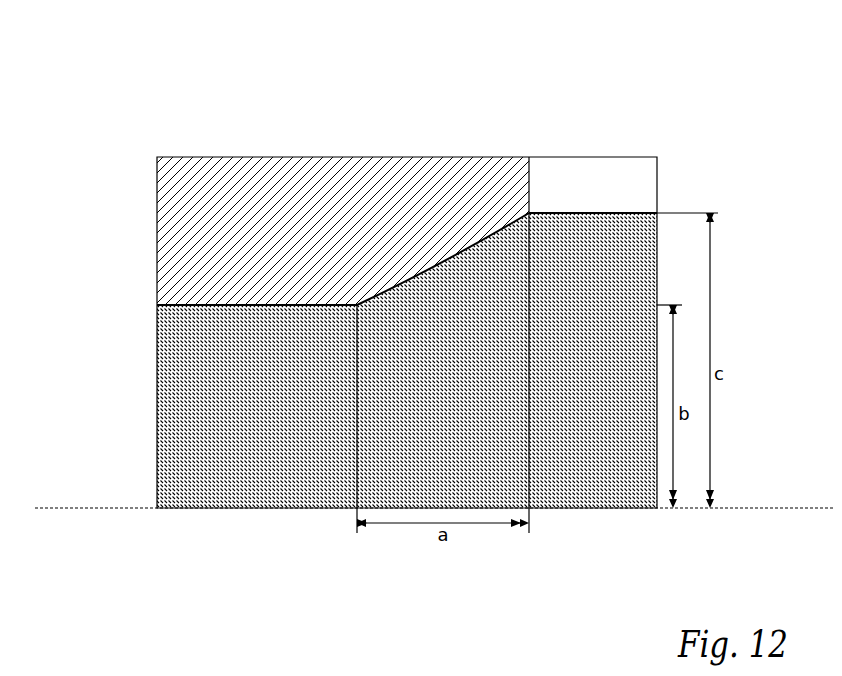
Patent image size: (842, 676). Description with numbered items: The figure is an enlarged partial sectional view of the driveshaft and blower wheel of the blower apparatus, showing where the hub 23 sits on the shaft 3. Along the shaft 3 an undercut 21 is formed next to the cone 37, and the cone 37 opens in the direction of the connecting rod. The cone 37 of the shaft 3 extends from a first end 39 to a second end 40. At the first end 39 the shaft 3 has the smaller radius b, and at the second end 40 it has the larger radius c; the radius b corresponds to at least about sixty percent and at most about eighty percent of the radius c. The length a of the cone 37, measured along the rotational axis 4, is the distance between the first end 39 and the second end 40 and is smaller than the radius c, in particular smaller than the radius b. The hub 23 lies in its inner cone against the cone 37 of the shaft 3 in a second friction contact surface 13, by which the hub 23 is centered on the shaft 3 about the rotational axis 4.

The hub 23 is at (461, 175).
The shaft 3 is at (631, 238).
The undercut 21 is at (267, 305).
The first end 39 is at (357, 305).
The cone 37 is at (415, 273).
The second friction contact surface 13 is at (468, 243).
The second end 40 is at (529, 213).
The rotational axis 4 is at (730, 508).